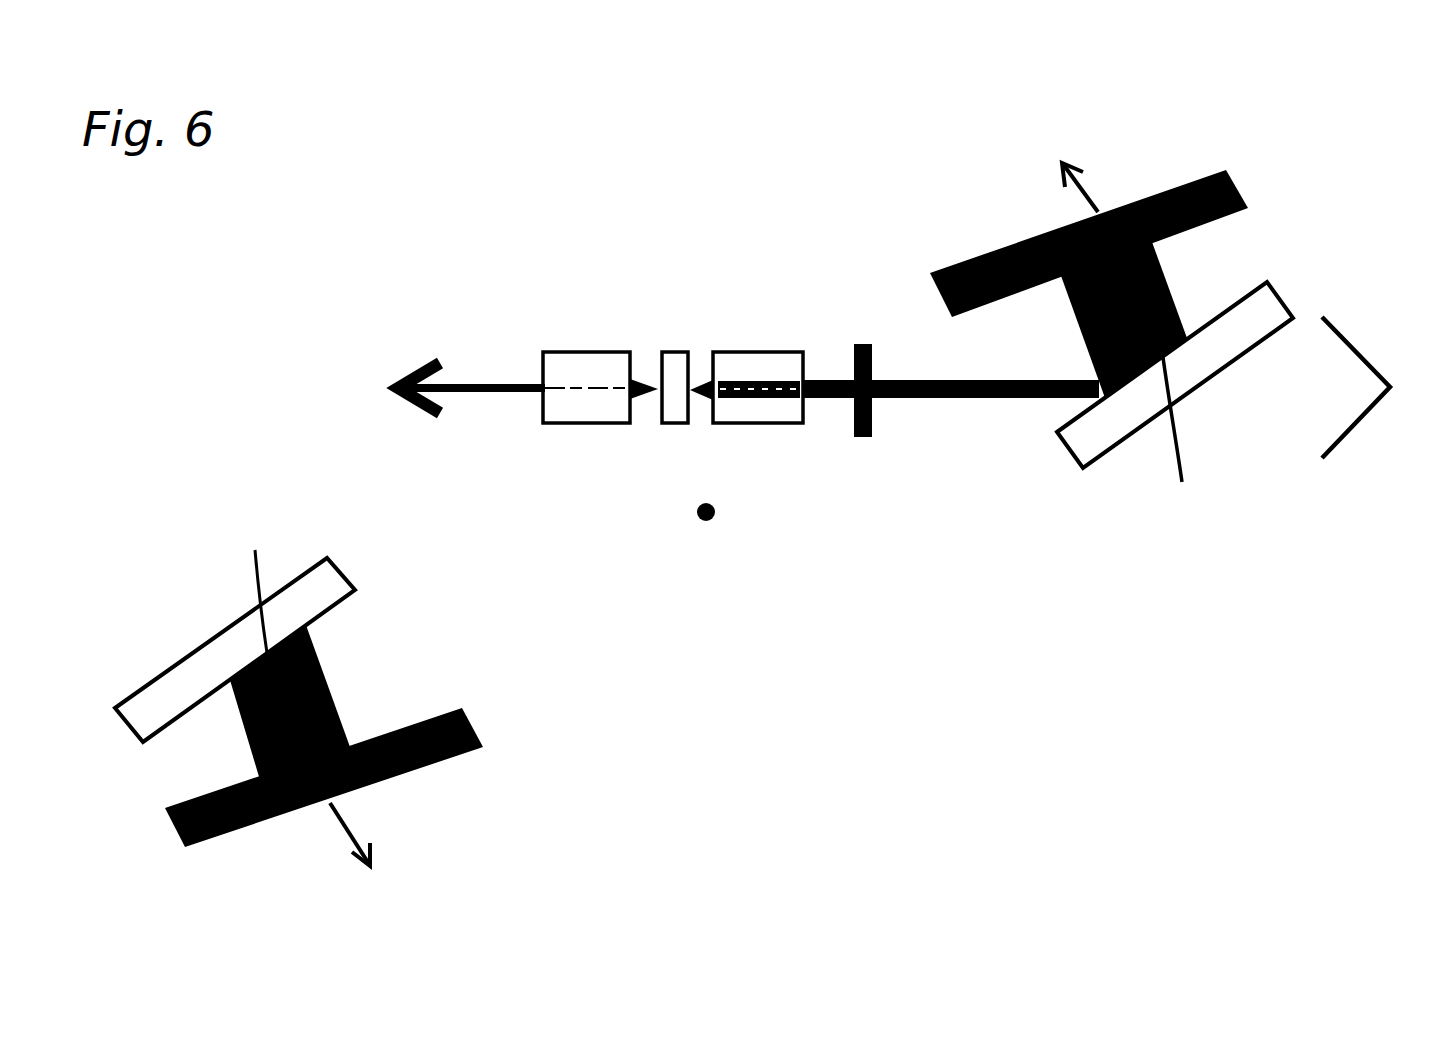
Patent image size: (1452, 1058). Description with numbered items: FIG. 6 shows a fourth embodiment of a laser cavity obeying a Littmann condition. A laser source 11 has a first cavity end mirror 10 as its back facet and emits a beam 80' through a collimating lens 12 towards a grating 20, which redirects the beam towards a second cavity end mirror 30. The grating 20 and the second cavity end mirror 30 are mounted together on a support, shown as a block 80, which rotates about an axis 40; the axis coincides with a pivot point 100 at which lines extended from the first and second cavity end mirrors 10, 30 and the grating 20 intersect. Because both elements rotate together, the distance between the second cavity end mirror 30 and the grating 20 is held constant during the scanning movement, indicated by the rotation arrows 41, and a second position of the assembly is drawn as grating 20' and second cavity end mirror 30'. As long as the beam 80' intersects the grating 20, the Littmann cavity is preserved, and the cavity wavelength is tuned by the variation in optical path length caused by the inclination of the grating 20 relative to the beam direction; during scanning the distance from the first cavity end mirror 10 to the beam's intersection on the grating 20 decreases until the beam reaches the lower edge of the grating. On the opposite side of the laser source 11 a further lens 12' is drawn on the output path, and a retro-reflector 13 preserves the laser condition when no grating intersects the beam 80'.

The first cavity end mirror 10 is at (657, 386).
The laser source 11 is at (675, 362).
The collimating lens 12 is at (764, 349).
The second optical module 12' is at (573, 354).
The retro-reflector 13 is at (1367, 358).
The grating 20 is at (1175, 375).
The plate in second position 20' is at (235, 646).
The second cavity end mirror 30 is at (1089, 210).
The mirror in second position 30' is at (324, 755).
The axis 40 is at (696, 522).
The rotation direction 41 is at (1178, 467).
The support block 80 is at (1150, 320).
The beam 80' is at (951, 417).
The pivot point 100 is at (715, 510).